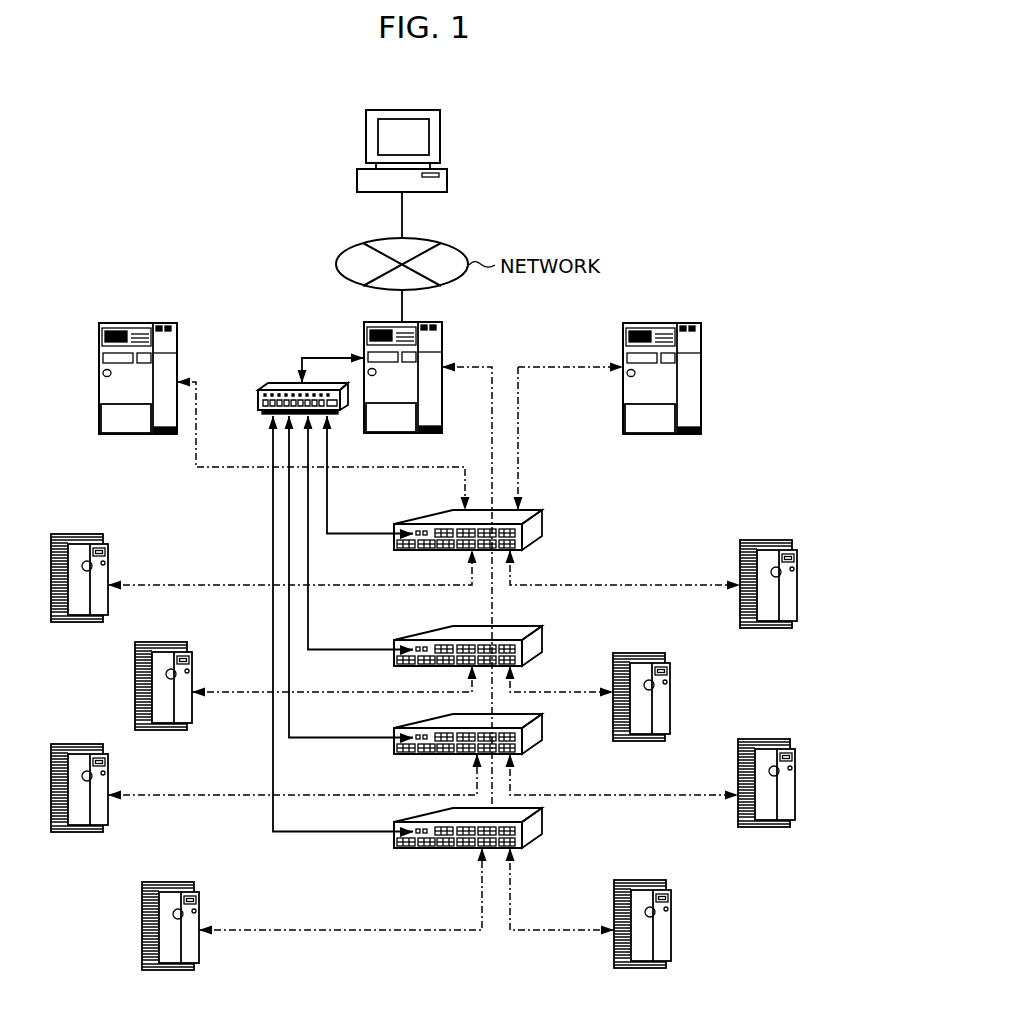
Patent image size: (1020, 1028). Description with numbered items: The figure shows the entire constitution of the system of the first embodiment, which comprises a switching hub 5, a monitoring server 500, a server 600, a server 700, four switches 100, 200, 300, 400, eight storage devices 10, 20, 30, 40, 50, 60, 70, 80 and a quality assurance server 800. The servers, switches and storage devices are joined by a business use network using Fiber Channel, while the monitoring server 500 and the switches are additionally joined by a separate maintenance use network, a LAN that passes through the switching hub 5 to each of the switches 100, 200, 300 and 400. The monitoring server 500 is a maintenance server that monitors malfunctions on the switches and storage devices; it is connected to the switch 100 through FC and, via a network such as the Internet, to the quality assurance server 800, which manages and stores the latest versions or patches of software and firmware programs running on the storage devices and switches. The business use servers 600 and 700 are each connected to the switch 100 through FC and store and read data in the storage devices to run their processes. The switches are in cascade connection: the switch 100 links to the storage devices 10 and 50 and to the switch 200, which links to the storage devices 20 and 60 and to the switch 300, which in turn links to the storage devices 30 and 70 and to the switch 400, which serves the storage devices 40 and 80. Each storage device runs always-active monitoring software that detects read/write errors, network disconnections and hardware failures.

The switching hub 5 is at (257, 397).
The storage device 10 is at (97, 518).
The storage device 20 is at (168, 626).
The storage device 30 is at (108, 768).
The storage device 40 is at (199, 908).
The storage device 50 is at (767, 540).
The storage device 60 is at (668, 667).
The storage device 70 is at (765, 739).
The storage device 80 is at (671, 908).
The switch 100 is at (523, 519).
The switch 200 is at (508, 624).
The switch 300 is at (543, 722).
The switch 400 is at (543, 812).
The monitoring server 500 is at (442, 331).
The server 600 is at (137, 323).
The server 700 is at (645, 323).
The quality assurance server 800 is at (440, 138).